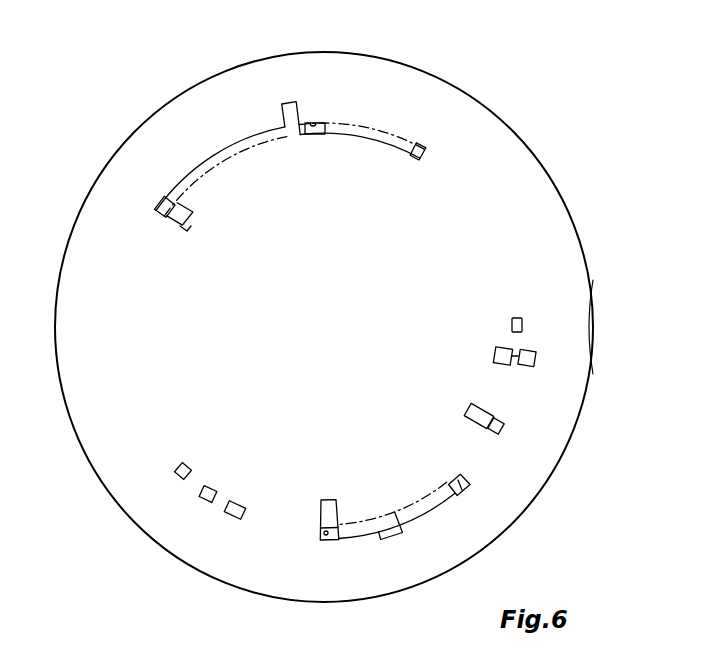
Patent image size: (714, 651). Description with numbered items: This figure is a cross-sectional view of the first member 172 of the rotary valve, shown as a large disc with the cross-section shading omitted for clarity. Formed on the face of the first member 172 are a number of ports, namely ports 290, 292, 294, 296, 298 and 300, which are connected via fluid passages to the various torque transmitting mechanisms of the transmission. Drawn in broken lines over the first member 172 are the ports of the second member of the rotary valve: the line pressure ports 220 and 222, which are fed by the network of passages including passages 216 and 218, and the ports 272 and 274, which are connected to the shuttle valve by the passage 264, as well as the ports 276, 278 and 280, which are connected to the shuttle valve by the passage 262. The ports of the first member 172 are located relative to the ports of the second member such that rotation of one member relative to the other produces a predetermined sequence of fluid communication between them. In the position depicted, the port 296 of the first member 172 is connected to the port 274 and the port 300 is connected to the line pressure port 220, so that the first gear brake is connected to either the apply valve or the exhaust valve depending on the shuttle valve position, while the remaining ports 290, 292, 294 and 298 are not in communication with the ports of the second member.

The first member 172 is at (594, 278).
The passage 216 is at (282, 108).
The passage 218 is at (397, 540).
The line pressure port 220 is at (252, 150).
The line pressure port 222 is at (390, 517).
The passage 262 is at (186, 232).
The passage 264 is at (467, 420).
The port 272 is at (500, 430).
The port 274 is at (323, 533).
The port 276 is at (517, 367).
The port 278 is at (467, 473).
The port 280 is at (156, 208).
The port 290 is at (183, 458).
The port 292 is at (213, 488).
The port 294 is at (233, 515).
The port 296 is at (334, 540).
The port 298 is at (523, 326).
The port 300 is at (316, 123).